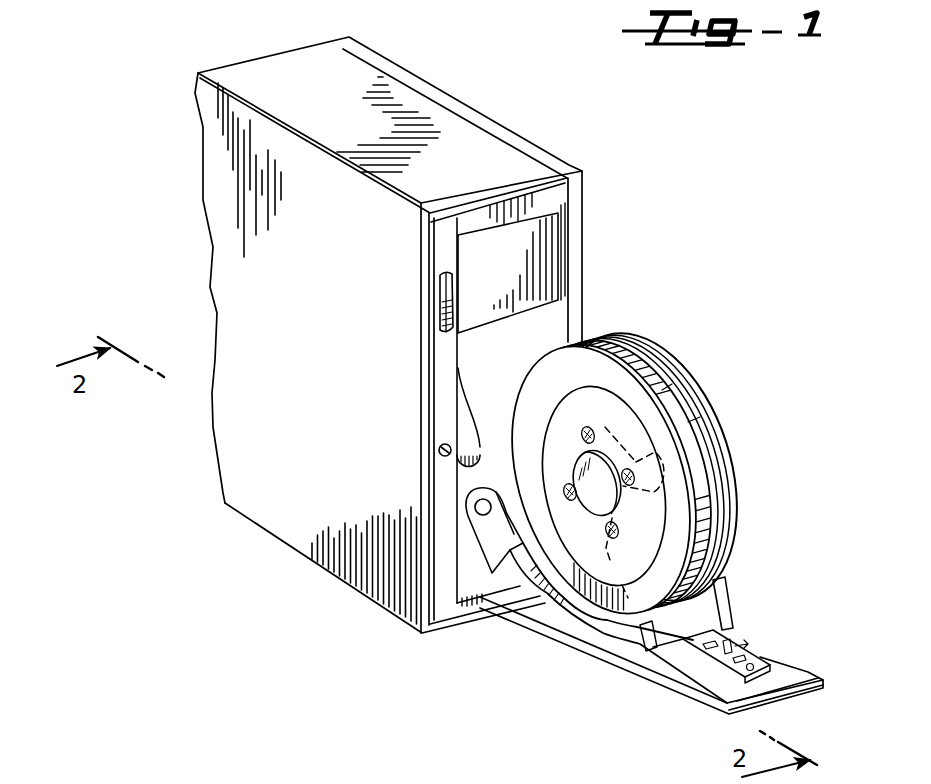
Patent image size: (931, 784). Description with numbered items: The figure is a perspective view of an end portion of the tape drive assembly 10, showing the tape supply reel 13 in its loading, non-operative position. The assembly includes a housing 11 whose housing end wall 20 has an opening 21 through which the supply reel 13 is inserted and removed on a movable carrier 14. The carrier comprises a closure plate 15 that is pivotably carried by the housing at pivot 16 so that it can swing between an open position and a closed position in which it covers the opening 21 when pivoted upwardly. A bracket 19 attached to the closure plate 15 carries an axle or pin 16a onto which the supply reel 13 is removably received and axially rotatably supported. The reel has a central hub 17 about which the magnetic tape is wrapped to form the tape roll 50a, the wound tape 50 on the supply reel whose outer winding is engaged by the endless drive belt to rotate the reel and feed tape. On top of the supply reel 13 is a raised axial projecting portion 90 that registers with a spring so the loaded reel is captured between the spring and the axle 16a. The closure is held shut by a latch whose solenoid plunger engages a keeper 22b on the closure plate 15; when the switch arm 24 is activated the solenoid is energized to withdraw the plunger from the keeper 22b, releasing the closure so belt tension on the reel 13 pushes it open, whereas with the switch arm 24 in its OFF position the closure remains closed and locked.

The tape drive assembly 10 is at (628, 182).
The housing 11 is at (285, 342).
The tape supply reel 13 is at (645, 335).
The movable carrier 14 is at (620, 652).
The closure plate 15 is at (682, 683).
The pivot 16 is at (480, 504).
The axle or pin 16a is at (613, 498).
The central hub 17 is at (561, 410).
The bracket 19 is at (707, 603).
The housing end wall 20 is at (441, 371).
The opening 21 is at (560, 317).
The keeper 22b is at (748, 660).
The switch arm 24 is at (441, 293).
The reel rim flange 50 is at (690, 428).
The tape roll 50a is at (667, 392).
The raised axial projecting portion 90 is at (576, 466).